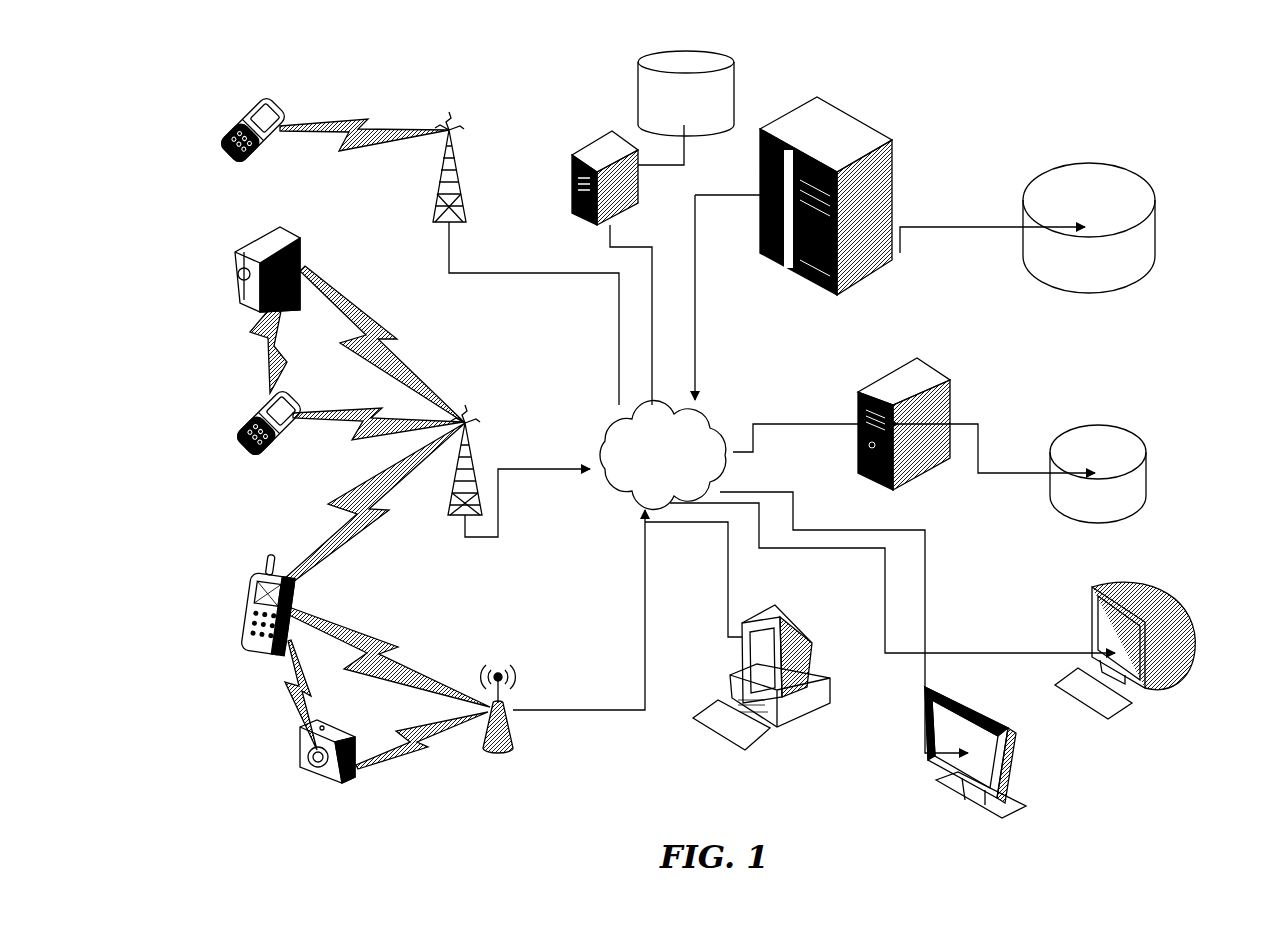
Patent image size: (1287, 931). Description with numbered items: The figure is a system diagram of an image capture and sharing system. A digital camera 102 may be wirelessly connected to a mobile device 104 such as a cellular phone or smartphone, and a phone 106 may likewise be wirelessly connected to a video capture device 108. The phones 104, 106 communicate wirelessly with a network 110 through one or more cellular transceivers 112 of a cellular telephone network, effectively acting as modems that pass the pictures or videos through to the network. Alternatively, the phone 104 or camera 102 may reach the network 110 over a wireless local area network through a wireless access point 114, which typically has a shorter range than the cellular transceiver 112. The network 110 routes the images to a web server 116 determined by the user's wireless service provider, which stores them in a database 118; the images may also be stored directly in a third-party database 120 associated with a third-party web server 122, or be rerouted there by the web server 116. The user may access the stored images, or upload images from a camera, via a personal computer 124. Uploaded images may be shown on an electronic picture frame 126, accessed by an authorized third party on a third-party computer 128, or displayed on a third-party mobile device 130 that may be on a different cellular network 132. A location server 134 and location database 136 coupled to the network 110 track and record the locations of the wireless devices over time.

The digital camera 102 is at (298, 750).
The mobile device 104 is at (243, 613).
The phone 106 is at (235, 445).
The video capture device 108 is at (237, 258).
The network 110 is at (720, 421).
The cellular transceiver 112 is at (475, 452).
The wireless access point 114 is at (512, 730).
The web server 116 is at (895, 157).
The database 118 is at (1157, 227).
The third-party database 120 is at (1150, 473).
The third-party web server 122 is at (953, 412).
The personal computer 124 is at (1178, 615).
The electronic picture frame 126 is at (1010, 763).
The third-party computer 128 is at (802, 720).
The third-party mobile device 130 is at (272, 95).
The different cellular network 132 is at (463, 163).
The location server 134 is at (595, 140).
The location database 136 is at (735, 102).